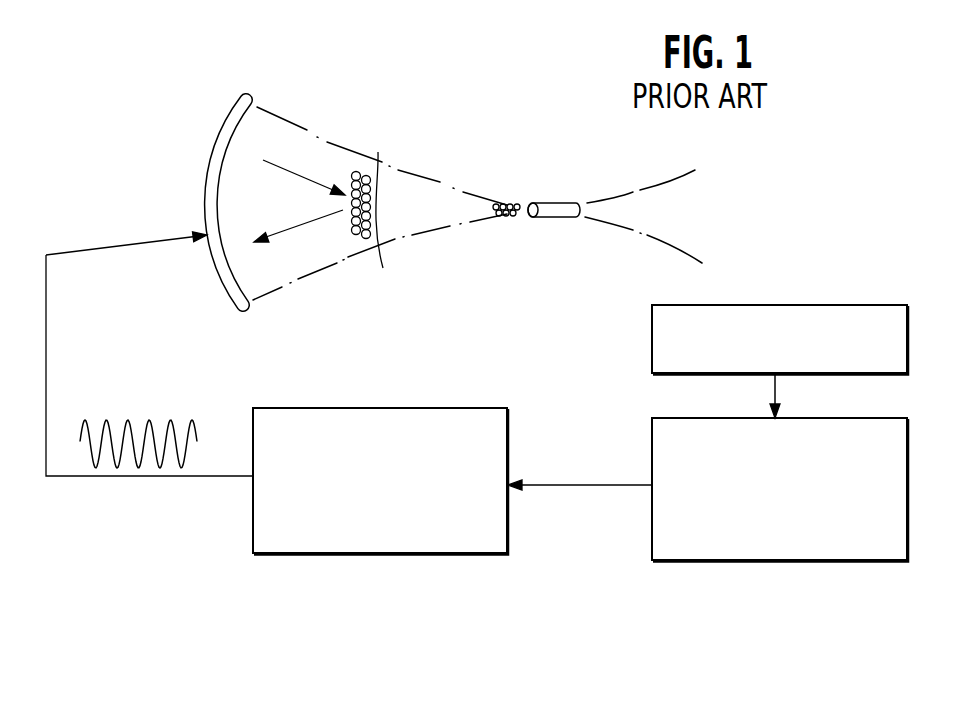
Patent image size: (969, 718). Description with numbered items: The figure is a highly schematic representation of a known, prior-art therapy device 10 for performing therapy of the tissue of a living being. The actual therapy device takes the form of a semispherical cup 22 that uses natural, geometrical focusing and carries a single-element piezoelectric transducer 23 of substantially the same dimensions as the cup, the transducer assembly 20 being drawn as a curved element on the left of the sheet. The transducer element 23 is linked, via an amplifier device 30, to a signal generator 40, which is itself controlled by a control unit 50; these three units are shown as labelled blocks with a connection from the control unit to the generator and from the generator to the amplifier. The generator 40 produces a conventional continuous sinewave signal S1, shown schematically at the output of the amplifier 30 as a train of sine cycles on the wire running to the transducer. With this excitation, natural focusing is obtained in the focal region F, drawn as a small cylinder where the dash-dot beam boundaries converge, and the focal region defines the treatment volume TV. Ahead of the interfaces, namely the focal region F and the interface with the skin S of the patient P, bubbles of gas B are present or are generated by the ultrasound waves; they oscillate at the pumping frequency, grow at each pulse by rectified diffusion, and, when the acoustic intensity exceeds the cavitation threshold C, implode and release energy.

The therapy device 10 is at (499, 565).
The ultrasonic transducer 20 is at (200, 156).
The semi-spherical cup 22 is at (227, 122).
The piezoelectric transducer element 23 is at (229, 143).
The amplifier device 30 is at (395, 499).
The signal generator 40 is at (788, 507).
The control unit 50 is at (787, 371).
The skin S is at (378, 152).
The continuous sinewave signal S1 is at (128, 419).
The gas bubbles B is at (290, 212).
The patient P is at (487, 142).
The focal region F is at (553, 203).
The cavitation threshold C is at (383, 227).
The treatment volume TV is at (553, 219).